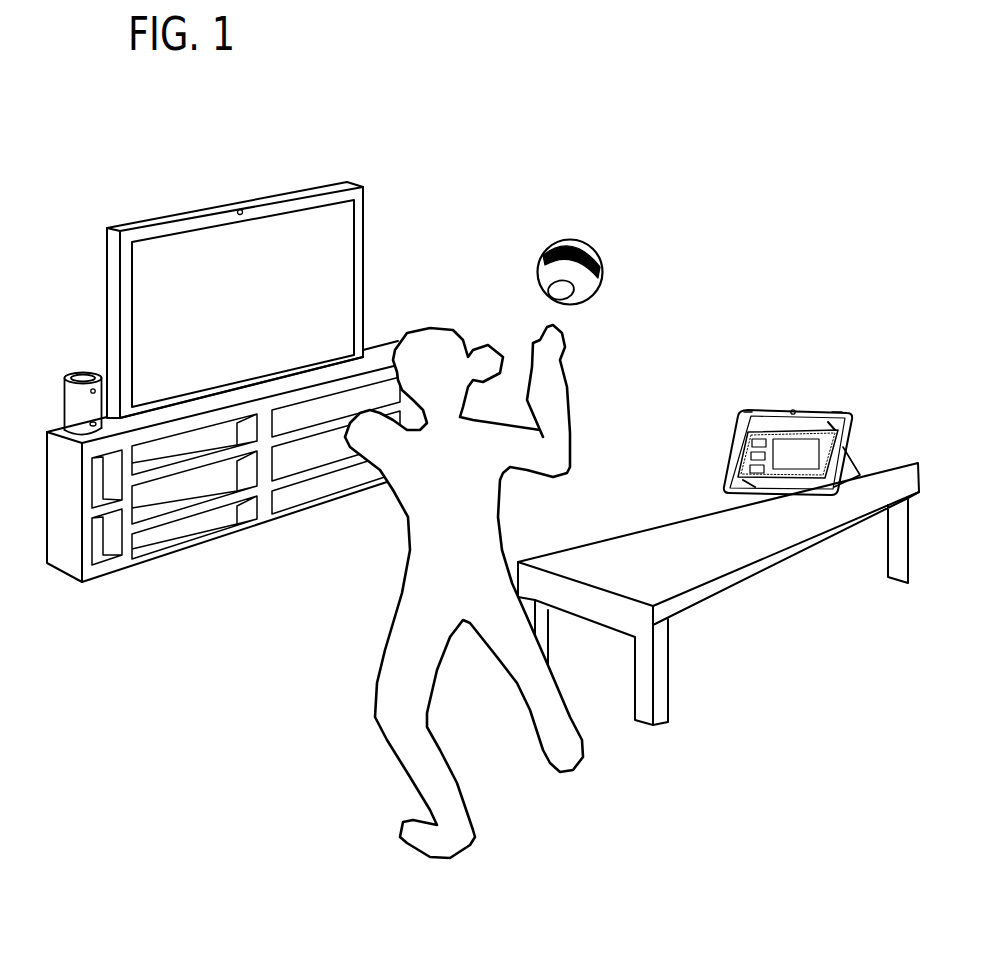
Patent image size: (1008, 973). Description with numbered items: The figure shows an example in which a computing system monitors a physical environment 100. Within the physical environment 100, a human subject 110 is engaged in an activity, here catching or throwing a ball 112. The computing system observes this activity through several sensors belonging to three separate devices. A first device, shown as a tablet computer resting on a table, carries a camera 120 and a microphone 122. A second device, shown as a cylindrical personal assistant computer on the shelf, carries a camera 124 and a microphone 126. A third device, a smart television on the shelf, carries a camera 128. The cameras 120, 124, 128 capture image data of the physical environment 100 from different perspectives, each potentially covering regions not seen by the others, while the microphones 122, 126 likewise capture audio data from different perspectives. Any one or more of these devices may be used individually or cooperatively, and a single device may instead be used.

The physical environment 100 is at (323, 104).
The human subject 110 is at (380, 713).
The ball 112 is at (578, 242).
The camera 120 is at (821, 416).
The microphone 122 is at (848, 410).
The camera 124 is at (93, 388).
The microphone 126 is at (90, 423).
The camera 128 is at (240, 210).